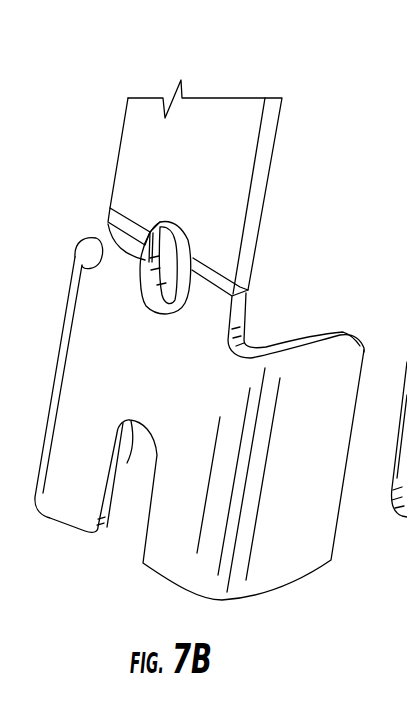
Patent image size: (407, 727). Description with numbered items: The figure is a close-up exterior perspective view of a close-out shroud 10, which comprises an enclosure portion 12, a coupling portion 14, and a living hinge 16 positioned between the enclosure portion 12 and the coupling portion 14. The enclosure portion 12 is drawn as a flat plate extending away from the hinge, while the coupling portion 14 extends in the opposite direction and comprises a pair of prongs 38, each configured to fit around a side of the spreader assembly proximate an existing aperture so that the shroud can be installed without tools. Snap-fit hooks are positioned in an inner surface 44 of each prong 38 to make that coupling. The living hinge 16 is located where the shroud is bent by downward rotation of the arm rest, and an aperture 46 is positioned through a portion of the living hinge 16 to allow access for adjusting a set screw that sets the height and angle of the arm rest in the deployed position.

The close-out shroud 10 is at (215, 68).
The enclosure portion 12 is at (143, 110).
The coupling portion 14 is at (242, 567).
The living hinge 16 is at (217, 266).
The prong 38 is at (312, 548).
The inner surface 44 is at (304, 348).
The aperture 46 is at (108, 222).